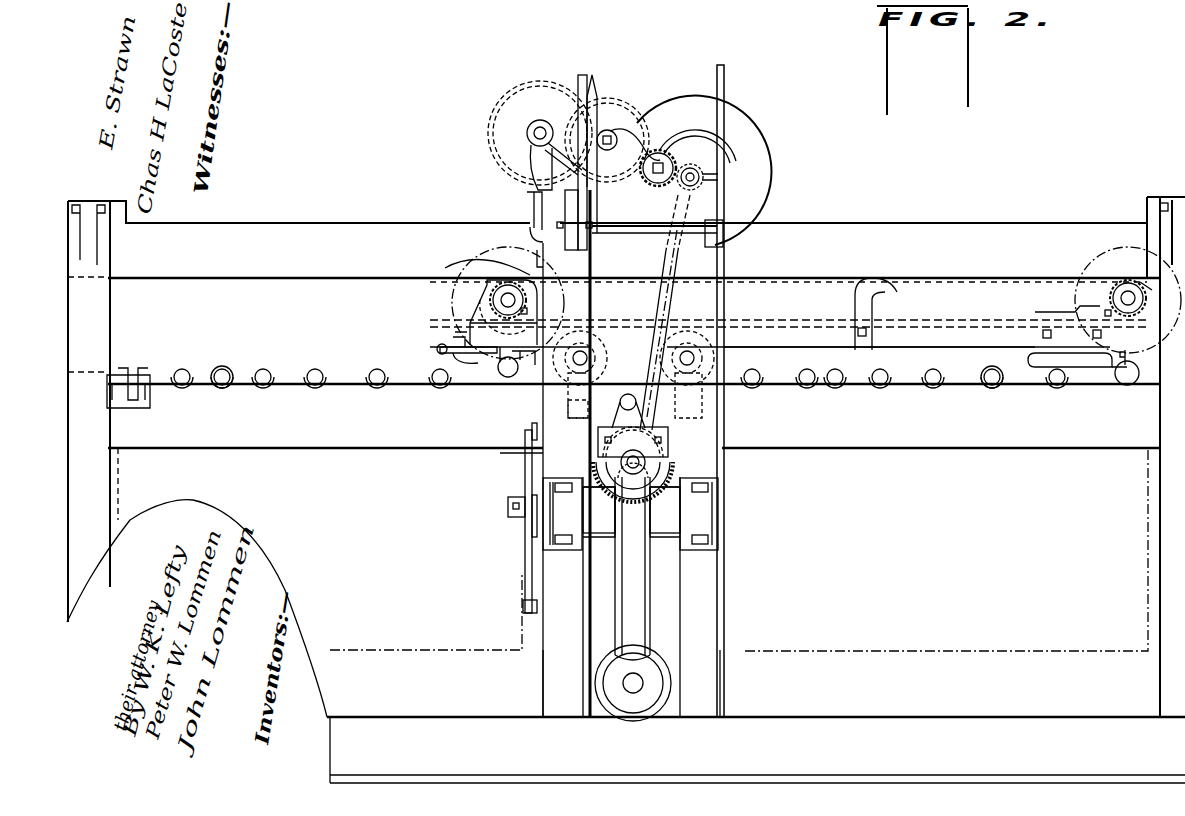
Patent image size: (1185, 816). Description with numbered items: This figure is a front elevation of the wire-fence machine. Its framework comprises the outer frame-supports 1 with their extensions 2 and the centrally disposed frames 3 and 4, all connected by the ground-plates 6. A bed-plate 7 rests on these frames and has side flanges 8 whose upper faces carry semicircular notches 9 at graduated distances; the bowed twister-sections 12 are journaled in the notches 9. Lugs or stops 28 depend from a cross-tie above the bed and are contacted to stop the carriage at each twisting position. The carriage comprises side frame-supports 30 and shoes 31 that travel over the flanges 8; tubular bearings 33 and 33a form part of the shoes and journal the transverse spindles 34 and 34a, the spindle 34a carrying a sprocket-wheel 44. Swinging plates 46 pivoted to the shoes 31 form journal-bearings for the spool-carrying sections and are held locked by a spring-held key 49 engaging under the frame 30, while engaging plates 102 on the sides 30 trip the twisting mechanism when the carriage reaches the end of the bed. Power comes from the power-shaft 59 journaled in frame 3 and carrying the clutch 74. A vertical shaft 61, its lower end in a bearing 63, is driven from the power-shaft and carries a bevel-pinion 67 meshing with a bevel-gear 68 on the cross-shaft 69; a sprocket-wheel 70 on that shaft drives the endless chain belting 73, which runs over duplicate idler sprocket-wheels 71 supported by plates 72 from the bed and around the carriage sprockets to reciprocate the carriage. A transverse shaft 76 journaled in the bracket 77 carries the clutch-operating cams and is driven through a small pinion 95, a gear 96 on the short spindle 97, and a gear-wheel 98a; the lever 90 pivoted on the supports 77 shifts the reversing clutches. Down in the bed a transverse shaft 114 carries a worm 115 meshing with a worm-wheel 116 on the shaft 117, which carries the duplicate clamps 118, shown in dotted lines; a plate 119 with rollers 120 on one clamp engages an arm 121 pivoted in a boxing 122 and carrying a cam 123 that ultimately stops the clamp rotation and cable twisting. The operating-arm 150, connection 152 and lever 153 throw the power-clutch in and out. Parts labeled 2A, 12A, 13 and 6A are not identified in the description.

The outer frame-supports 1 is at (1175, 528).
The extensions 2 is at (629, 326).
The top rail 2A is at (350, 246).
The centrally-disposed frame 3 is at (703, 670).
The centrally-disposed frame 4 is at (553, 672).
The ground-plates 6 is at (1090, 720).
The bed-plate 7 is at (854, 449).
The side flanges 8 is at (651, 415).
The semicircular notches 9 is at (316, 386).
The twister-sections 12 is at (223, 388).
The bar 12A is at (580, 405).
The bracket 13 is at (437, 388).
The lugs or stops 28 is at (1148, 272).
The side frame-supports 30 is at (985, 325).
The shoes 31 is at (1083, 366).
The tubular bearing 33 is at (1128, 310).
The tubular bearing 33a is at (490, 323).
The shaft or spindle 34 is at (1110, 297).
The shaft or spindle 34a is at (500, 300).
The sprocket-wheel 44 is at (487, 270).
The plates 46 is at (500, 376).
The key 49 is at (437, 349).
The power-shaft 59 is at (702, 177).
The vertical shaft 61 is at (668, 294).
The bearing 63 is at (625, 405).
The bevel-pinion 67 is at (670, 430).
The bevel-gear 68 is at (672, 465).
The cross-shaft 69 is at (613, 490).
The sprocket-wheel 70 is at (655, 492).
The duplicate sprocket-wheels 71 is at (655, 335).
The plates 72 is at (570, 392).
The endless chain belting 73 is at (801, 280).
The clutch 74 is at (742, 140).
The transverse shaft 76 is at (540, 122).
The bracket 77 is at (545, 170).
The lever 90 is at (586, 78).
The small pinion 95 is at (660, 150).
The gear 96 is at (630, 105).
The short spindle 97 is at (607, 150).
The gear-wheel 98a is at (505, 123).
The engaging plates 102 is at (498, 248).
The transverse shaft 114 is at (628, 690).
The worm 115 is at (645, 705).
The worm-wheel 116 is at (635, 612).
The shaft 117 is at (508, 505).
The duplicate clamps 118 is at (624, 551).
The plate 119 is at (525, 558).
The rollers 120 is at (525, 603).
The arm 121 is at (540, 445).
The boxing 122 is at (585, 452).
The plate or cam 123 is at (588, 488).
The operating-arm 150 is at (530, 206).
The connection 152 is at (640, 228).
The lever 153 is at (722, 202).
The link 6A is at (672, 195).